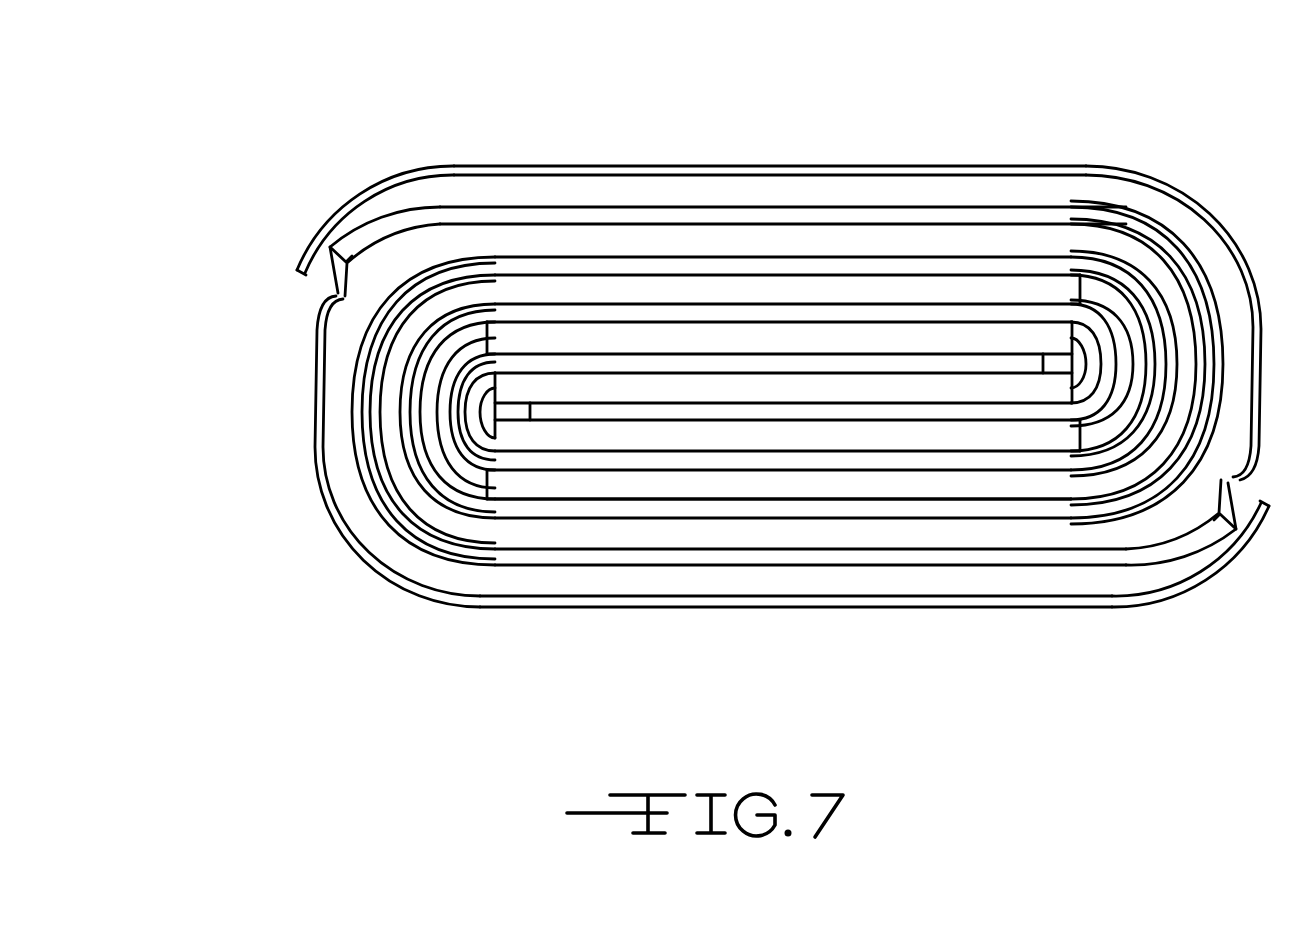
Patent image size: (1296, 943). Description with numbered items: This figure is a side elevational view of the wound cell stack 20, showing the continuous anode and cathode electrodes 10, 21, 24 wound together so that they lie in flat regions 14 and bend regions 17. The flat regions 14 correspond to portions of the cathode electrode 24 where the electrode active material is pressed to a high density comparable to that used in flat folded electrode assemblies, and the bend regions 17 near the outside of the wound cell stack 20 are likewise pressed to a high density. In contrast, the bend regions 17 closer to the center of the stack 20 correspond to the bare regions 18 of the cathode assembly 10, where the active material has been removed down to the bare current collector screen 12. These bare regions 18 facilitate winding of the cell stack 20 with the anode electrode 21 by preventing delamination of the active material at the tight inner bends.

The cathode assembly 10 is at (730, 373).
The bare current collector screen 12 is at (440, 460).
The flat regions 14 is at (648, 620).
The bend regions 17 is at (285, 400).
The bare regions 18 is at (443, 450).
The wound cell stack 20 is at (316, 130).
The anode electrode 21 is at (553, 413).
The cathode electrode 24 is at (570, 172).